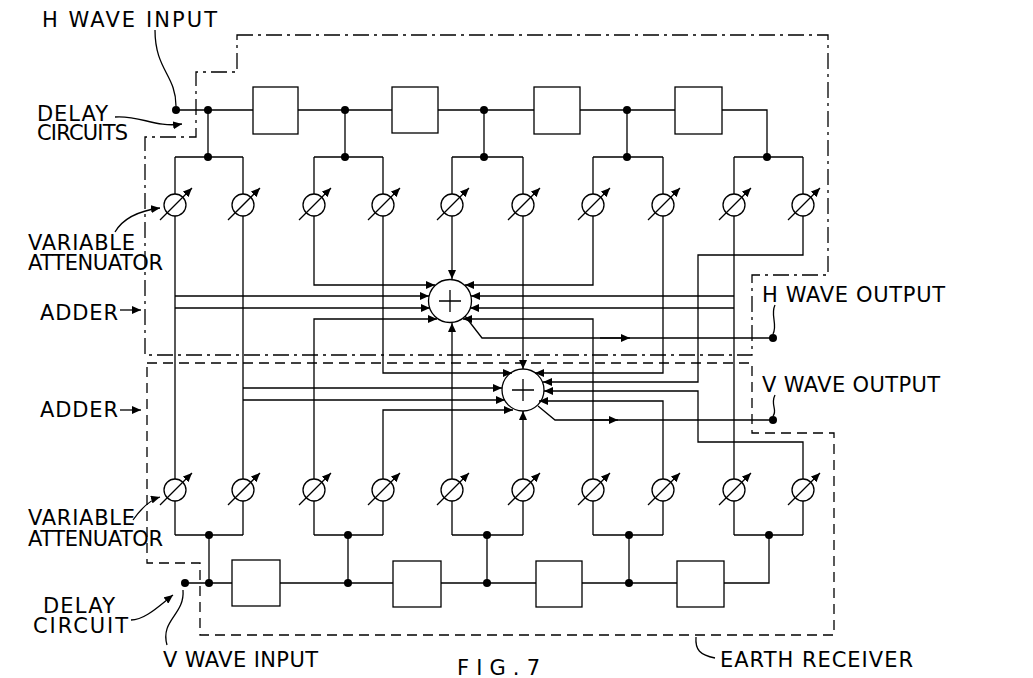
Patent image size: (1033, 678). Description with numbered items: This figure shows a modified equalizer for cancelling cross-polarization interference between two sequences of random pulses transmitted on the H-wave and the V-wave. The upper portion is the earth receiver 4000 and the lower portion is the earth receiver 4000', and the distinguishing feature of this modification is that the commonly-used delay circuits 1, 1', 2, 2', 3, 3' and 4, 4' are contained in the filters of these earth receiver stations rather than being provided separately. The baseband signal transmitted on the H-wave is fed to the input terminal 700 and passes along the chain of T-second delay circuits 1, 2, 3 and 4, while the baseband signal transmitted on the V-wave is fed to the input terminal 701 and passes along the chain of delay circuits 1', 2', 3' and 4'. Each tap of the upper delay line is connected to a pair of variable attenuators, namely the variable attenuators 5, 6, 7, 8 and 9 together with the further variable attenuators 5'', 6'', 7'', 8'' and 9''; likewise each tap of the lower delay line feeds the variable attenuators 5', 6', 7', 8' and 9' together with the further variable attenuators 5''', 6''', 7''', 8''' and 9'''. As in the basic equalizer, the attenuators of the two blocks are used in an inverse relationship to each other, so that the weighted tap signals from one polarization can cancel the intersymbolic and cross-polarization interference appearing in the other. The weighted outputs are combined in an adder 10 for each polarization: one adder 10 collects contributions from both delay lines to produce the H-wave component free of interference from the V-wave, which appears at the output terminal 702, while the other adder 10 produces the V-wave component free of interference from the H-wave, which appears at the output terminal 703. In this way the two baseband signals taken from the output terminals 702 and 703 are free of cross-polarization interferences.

The delay circuit 1 is at (285, 92).
The delay circuit 2 is at (422, 91).
The delay circuit 3 is at (567, 92).
The delay circuit 4 is at (708, 92).
The delay circuit 1' is at (280, 597).
The delay circuit 2' is at (437, 597).
The delay circuit 3' is at (587, 597).
The delay circuit 4' is at (725, 596).
The variable attenuator 5 is at (181, 221).
The variable attenuator 5'' is at (253, 221).
The variable attenuator 6 is at (322, 222).
The variable attenuator 6'' is at (394, 222).
The variable attenuator 7 is at (462, 221).
The variable attenuator 7'' is at (533, 221).
The variable attenuator 8 is at (598, 220).
The variable attenuator 8'' is at (676, 221).
The variable attenuator 9 is at (743, 221).
The variable attenuator 9'' is at (828, 221).
The variable attenuator 5' is at (187, 498).
The variable attenuator 5''' is at (257, 504).
The variable attenuator 6' is at (324, 501).
The variable attenuator 6''' is at (395, 504).
The variable attenuator 7' is at (460, 502).
The variable attenuator 7''' is at (534, 502).
The variable attenuator 8' is at (600, 504).
The variable attenuator 8''' is at (678, 502).
The variable attenuator 9' is at (742, 503).
The variable attenuator 9''' is at (835, 483).
The adder 10 is at (442, 322).
The input terminal 700 is at (174, 106).
The input terminal 701 is at (182, 583).
The output terminal 702 is at (777, 338).
The output terminal 703 is at (777, 420).
The earth receiver 4000 is at (526, 195).
The earth receiver 4000' is at (530, 499).